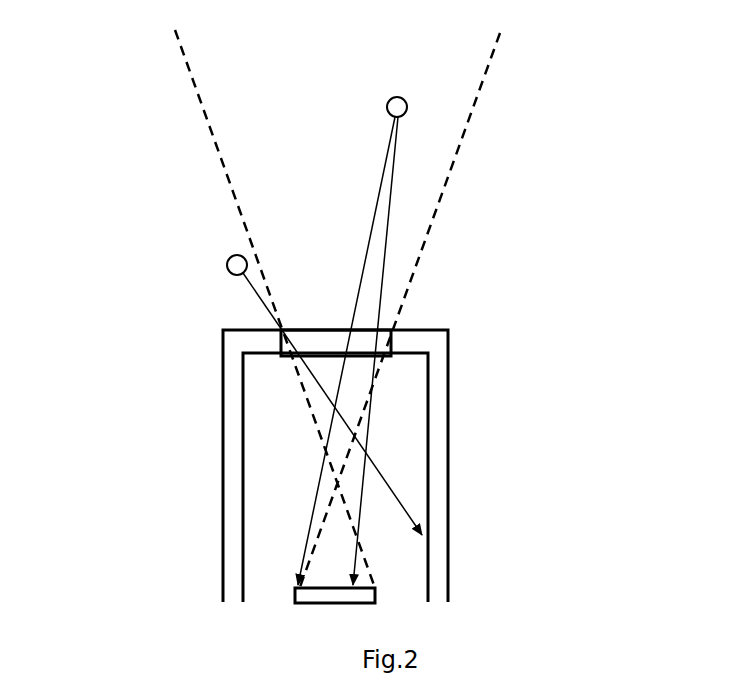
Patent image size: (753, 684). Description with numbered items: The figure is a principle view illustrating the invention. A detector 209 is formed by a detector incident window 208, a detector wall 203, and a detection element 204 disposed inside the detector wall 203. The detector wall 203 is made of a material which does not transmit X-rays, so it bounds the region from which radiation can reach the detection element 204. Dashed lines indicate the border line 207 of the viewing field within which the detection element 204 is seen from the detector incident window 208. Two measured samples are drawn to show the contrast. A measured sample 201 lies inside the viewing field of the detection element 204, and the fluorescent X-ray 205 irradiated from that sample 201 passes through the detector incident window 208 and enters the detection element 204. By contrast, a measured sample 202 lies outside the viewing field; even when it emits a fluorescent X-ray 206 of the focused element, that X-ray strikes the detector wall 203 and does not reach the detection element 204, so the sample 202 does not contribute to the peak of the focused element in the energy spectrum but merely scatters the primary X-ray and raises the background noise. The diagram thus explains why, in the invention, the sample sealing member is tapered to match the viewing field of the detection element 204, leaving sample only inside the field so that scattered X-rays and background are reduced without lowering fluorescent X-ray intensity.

The measured sample 201 is at (405, 110).
The measured sample 202 is at (228, 268).
The detector wall 203 is at (438, 440).
The detection element 204 is at (363, 597).
The fluorescent X-ray 205 is at (363, 270).
The fluorescent X-ray 206 is at (320, 393).
The border line of viewing field 207 is at (192, 82).
The detector incident window 208 is at (392, 356).
The detector 209 is at (578, 337).